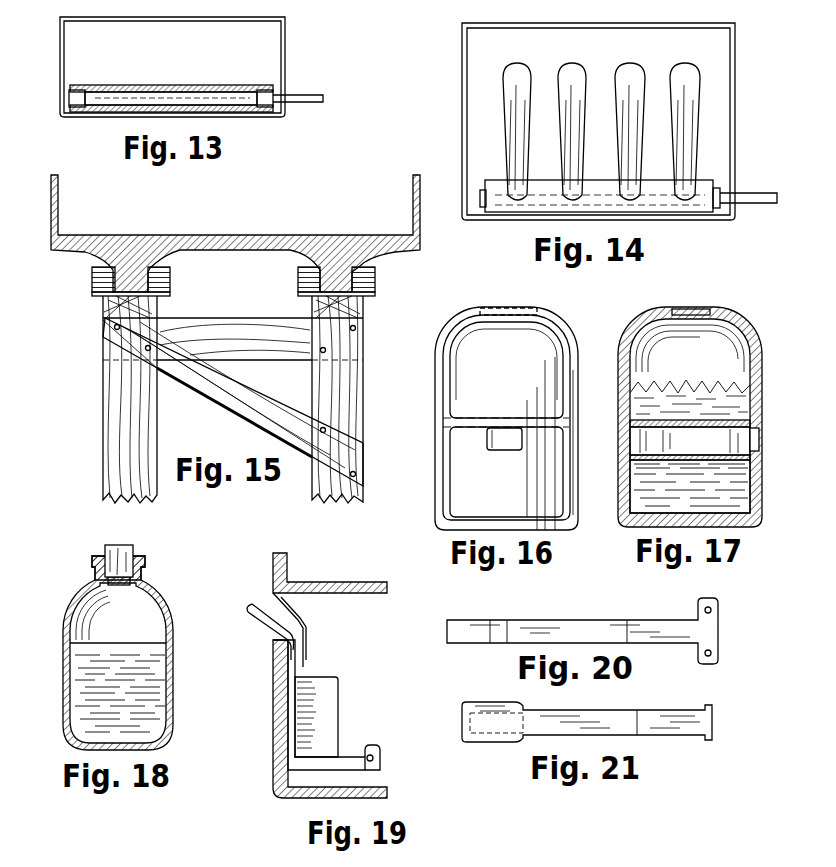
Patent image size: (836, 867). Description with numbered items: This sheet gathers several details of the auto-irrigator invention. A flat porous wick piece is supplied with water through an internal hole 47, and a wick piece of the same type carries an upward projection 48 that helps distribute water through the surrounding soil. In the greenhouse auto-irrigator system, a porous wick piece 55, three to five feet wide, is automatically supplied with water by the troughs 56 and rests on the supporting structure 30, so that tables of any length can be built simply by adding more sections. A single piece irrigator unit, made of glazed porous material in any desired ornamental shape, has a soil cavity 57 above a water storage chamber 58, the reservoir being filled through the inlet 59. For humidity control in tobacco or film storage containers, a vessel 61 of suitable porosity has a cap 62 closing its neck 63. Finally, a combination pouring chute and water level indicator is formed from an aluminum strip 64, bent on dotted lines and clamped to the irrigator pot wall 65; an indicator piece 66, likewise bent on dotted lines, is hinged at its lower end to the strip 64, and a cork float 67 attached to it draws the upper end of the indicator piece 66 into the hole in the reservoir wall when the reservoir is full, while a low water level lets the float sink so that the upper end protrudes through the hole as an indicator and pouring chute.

In FIG. 13, the internal hole 47 is at (310, 103).
In FIG. 14, the upward projection 48 is at (678, 70).
In FIG. 15, the porous wick piece 55 is at (170, 236).
In FIG. 15, the troughs 56 is at (171, 281).
In FIG. 15, the structure 30 is at (155, 437).
In FIG. 16, the inlet 59 is at (502, 445).
In FIG. 17, the inlet 59 is at (759, 438).
In FIG. 17, the soil cavity 57 is at (732, 370).
In FIG. 17, the water storage chamber 58 is at (737, 497).
In FIG. 18, the vessel 61 is at (173, 684).
In FIG. 18, the cap 62 is at (133, 549).
In FIG. 18, the neck 63 is at (132, 580).
In FIG. 19, the aluminum strip 64 is at (310, 772).
In FIG. 20, the aluminum strip 64 is at (546, 630).
In FIG. 19, the irrigator pot wall 65 is at (278, 702).
In FIG. 19, the indicator piece 66 is at (300, 676).
In FIG. 21, the indicator piece 66 is at (597, 697).
In FIG. 19, the cork float 67 is at (326, 706).